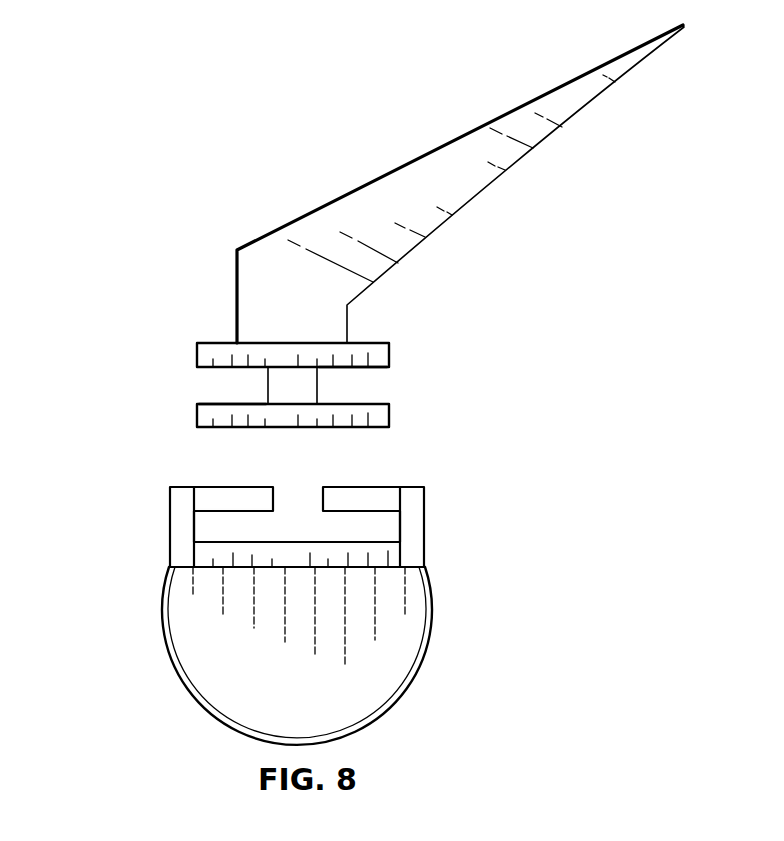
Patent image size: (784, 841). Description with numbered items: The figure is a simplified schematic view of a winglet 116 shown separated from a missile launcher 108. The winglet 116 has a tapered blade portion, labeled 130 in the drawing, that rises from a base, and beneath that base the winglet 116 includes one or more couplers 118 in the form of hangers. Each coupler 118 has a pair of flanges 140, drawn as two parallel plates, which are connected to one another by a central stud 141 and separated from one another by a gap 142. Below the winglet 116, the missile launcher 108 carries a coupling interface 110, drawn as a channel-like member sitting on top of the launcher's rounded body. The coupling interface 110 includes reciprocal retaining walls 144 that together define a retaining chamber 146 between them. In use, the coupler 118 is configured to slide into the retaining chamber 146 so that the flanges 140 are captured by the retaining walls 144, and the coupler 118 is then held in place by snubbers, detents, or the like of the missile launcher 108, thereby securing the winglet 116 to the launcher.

The missile launcher 108 is at (435, 630).
The coupling interface 110 is at (395, 472).
The winglet 116 is at (280, 183).
The coupler 118 is at (353, 392).
The blade 130 is at (440, 145).
The flange 140 is at (197, 415).
The central stud 141 is at (276, 375).
The gap 142 is at (213, 389).
The reciprocal retaining walls 144 is at (182, 487).
The retaining chamber 146 is at (212, 528).